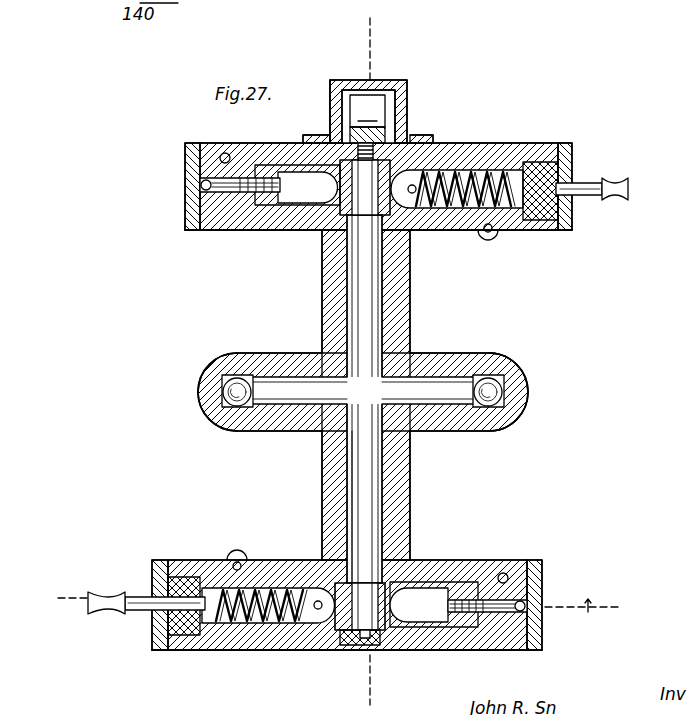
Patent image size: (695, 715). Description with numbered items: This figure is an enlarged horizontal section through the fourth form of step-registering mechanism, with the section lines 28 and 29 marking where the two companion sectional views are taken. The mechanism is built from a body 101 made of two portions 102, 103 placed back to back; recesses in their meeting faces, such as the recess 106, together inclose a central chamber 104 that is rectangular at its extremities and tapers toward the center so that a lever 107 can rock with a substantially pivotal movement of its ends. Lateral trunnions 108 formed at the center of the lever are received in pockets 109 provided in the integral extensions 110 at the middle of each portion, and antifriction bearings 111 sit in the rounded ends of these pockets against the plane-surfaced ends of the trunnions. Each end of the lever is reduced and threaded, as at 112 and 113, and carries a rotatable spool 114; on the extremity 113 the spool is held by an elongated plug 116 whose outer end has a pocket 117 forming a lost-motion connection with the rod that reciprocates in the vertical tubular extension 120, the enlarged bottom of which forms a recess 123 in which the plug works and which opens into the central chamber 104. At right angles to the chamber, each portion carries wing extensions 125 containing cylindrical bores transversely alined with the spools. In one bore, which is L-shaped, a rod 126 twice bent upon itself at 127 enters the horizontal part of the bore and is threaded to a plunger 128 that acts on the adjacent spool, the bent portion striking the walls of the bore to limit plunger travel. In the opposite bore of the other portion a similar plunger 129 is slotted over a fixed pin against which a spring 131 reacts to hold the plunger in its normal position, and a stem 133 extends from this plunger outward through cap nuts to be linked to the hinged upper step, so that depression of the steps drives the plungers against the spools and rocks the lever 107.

The section line 28— 28 is at (356, 357).
The section line 29— 29 is at (334, 602).
The channel in cross arm 101 is at (441, 387).
The portion 102 is at (325, 294).
The portion 103 is at (408, 280).
The central chamber 104 is at (348, 325).
The recess 106 is at (479, 384).
The lever 107 is at (348, 497).
The lateral trunnions 108 is at (305, 398).
The pockets 109 is at (246, 377).
The integral extensions 110 is at (236, 418).
The antifriction bearings 111 is at (219, 397).
The reduced threaded extremity 112 is at (362, 645).
The reduced threaded extremity 113 is at (373, 175).
The rotatable spool 114 is at (319, 222).
The plug 116 is at (386, 125).
The pocket 117 is at (375, 100).
The vertical tubular extension 120 is at (345, 70).
The recess 123 is at (343, 104).
The wing extensions 125 is at (506, 157).
The rod 126 is at (220, 180).
The bent portion 127 is at (203, 183).
The plunger 128 is at (336, 179).
The plunger 129 is at (418, 162).
The spring 131 is at (458, 194).
The stem 133 is at (586, 186).